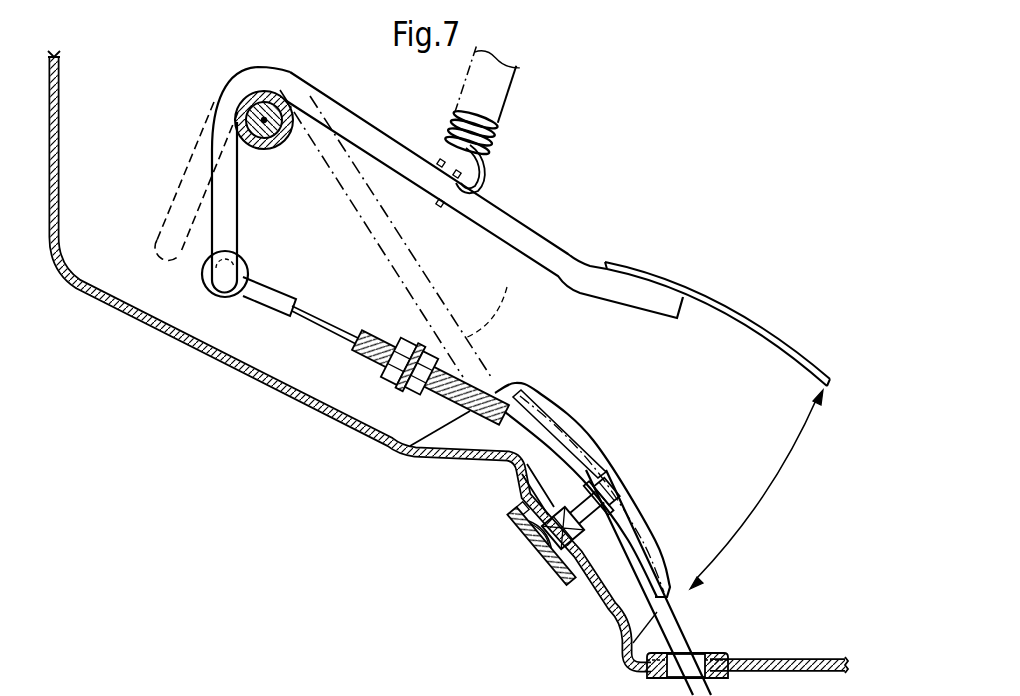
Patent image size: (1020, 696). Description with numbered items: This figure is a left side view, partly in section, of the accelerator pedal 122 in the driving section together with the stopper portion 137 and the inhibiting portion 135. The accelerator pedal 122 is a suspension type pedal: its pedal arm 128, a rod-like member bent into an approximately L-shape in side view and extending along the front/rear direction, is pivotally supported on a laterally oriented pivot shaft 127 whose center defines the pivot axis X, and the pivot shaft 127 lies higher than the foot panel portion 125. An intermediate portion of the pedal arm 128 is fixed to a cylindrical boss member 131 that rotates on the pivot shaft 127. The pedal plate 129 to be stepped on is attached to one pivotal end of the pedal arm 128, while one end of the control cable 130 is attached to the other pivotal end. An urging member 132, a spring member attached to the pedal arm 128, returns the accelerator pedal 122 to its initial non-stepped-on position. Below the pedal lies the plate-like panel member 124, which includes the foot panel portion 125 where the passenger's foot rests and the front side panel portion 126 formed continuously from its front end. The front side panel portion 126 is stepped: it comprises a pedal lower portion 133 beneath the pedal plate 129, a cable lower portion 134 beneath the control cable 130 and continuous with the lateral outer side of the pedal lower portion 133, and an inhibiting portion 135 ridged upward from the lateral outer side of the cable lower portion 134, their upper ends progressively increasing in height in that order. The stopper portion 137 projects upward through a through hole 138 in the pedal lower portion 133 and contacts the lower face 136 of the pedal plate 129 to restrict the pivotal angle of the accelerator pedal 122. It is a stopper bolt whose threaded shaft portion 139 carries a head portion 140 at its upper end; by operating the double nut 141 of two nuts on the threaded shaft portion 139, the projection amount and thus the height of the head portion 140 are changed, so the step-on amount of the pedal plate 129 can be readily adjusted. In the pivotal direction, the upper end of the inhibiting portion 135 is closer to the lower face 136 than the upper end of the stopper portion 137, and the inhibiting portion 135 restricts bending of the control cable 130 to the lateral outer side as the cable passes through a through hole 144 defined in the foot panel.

The accelerator pedal 122 is at (667, 233).
The panel member 124 is at (768, 618).
The foot panel portion 125 is at (808, 660).
The front side panel portion 126 is at (284, 357).
The pivot shaft 127 is at (266, 118).
The pedal arm 128 is at (549, 249).
The pedal plate 129 is at (714, 302).
The control cable 130 is at (344, 319).
The cylindrical boss member 131 is at (284, 141).
The urging member 132 is at (497, 129).
The pedal lower portion 133 is at (600, 553).
The cable lower portion 134 is at (555, 468).
The inhibiting portion 135 is at (532, 392).
The lower face 136 is at (771, 342).
The stopper portion 137 is at (600, 478).
The through hole 138 is at (560, 546).
The threaded shaft portion 139 is at (573, 506).
The head portion 140 is at (604, 491).
The double nut 141 is at (559, 551).
The through hole 144 is at (706, 654).
The pivot axis X is at (250, 112).